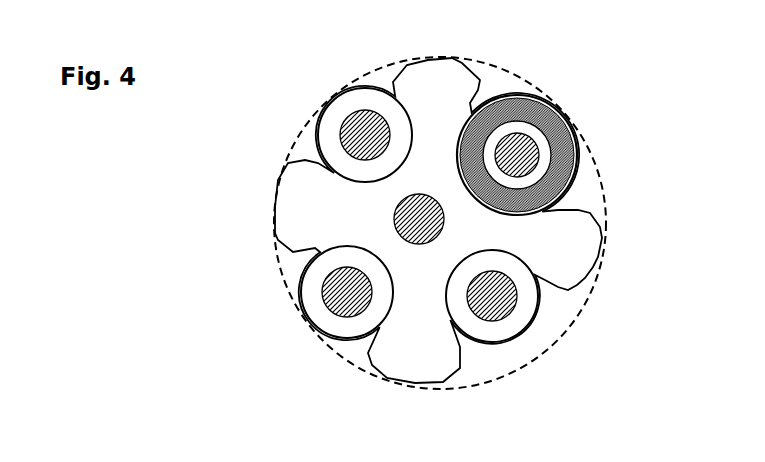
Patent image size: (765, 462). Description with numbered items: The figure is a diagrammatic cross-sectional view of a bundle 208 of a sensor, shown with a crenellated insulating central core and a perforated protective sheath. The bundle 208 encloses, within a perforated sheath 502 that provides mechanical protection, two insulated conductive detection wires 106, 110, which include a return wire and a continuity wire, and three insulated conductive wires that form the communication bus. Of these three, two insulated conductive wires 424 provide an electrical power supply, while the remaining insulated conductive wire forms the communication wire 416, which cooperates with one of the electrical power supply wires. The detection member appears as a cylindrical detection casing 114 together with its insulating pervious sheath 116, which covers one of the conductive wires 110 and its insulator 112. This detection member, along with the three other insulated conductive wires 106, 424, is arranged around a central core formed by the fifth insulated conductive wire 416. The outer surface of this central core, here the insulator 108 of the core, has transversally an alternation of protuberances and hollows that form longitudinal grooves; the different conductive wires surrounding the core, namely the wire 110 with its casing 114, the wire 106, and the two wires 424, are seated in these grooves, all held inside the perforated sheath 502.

The bundle 208 is at (102, 221).
The cylindrical detection casing 114 is at (555, 103).
The perforated sheath 502 is at (285, 157).
The insulated conductive detection wire 106 is at (342, 118).
The insulating pervious sheath 116 is at (573, 118).
The insulator 112 is at (568, 193).
The insulated conductive detection wire 110 is at (547, 163).
The insulated conductive wires 424 is at (317, 287).
The communication wire 416 is at (433, 248).
The insulator 108 is at (392, 352).